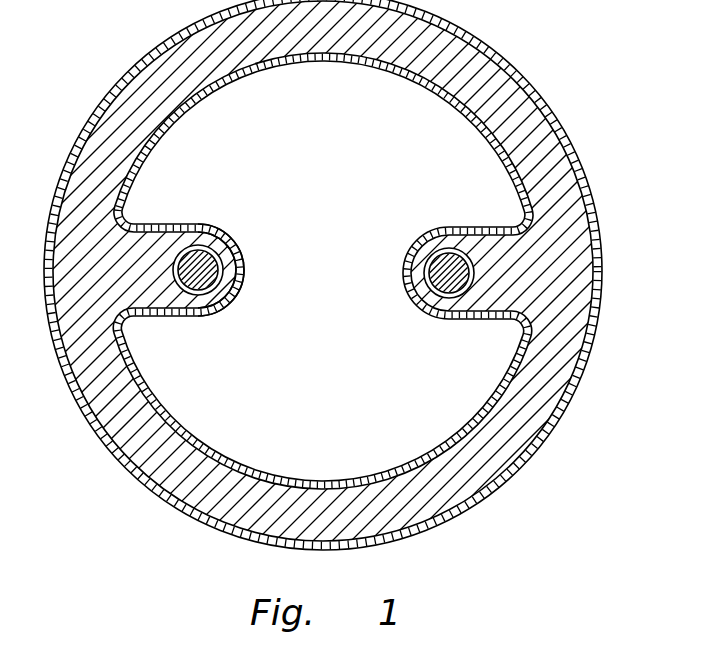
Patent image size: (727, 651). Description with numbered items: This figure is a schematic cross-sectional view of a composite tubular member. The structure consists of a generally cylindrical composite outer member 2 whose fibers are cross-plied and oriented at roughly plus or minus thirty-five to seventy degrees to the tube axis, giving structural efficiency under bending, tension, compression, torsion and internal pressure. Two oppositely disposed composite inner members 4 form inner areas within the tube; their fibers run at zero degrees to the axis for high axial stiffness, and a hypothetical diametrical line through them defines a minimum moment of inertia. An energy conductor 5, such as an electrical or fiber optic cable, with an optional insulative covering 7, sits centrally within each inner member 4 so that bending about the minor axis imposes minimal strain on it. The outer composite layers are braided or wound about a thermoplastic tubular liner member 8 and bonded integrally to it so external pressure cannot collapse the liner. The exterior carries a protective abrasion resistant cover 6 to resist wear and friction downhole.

The composite outer member 2 is at (586, 224).
The composite inner member 4 is at (216, 229).
The energy conductor 5 is at (241, 294).
The protective abrasion resistant cover 6 is at (551, 111).
The insulative covering 7 is at (246, 258).
The thermoplastic tubular liner member 8 is at (391, 62).